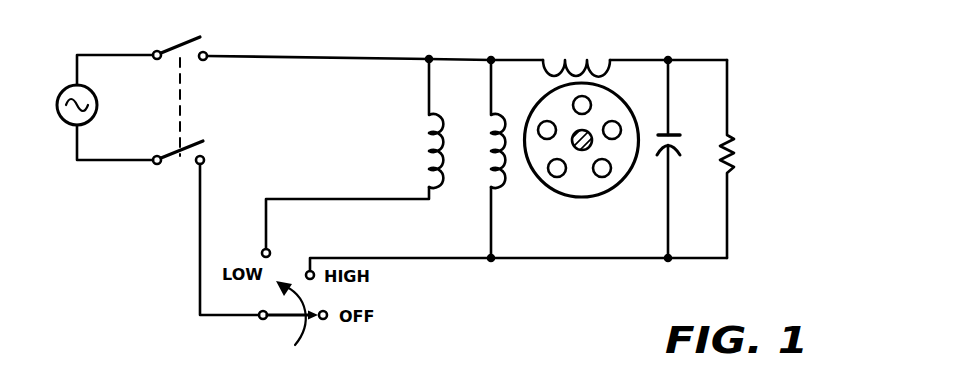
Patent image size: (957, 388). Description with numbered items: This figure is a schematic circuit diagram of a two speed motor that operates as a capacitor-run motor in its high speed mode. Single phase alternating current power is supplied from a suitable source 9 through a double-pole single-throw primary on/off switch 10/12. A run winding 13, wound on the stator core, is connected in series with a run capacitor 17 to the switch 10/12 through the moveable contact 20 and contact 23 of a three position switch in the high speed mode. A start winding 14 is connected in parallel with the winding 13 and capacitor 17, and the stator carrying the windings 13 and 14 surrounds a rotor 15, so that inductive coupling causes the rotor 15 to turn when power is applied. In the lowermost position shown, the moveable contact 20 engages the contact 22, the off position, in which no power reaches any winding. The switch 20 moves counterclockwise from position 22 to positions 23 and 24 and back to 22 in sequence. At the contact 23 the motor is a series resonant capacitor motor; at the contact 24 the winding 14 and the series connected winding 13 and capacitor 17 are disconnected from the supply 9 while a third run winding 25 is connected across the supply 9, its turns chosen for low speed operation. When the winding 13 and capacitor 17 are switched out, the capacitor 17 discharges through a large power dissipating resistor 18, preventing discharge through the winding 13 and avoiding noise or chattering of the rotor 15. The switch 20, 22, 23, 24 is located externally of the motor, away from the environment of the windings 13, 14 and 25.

The source 9 is at (65, 91).
The double-pole single-throw switch 10 is at (173, 47).
The double-pole single-throw switch 12 is at (173, 162).
The run winding 13 is at (580, 67).
The start winding 14 is at (523, 101).
The rotor 15 is at (625, 184).
The run capacitor 17 is at (677, 130).
The power dissipating resistor 18 is at (730, 135).
The moveable contact 20 is at (272, 318).
The contact 22 is at (330, 318).
The contact 23 is at (310, 268).
The contact 24 is at (262, 250).
The third run winding 25 is at (429, 115).